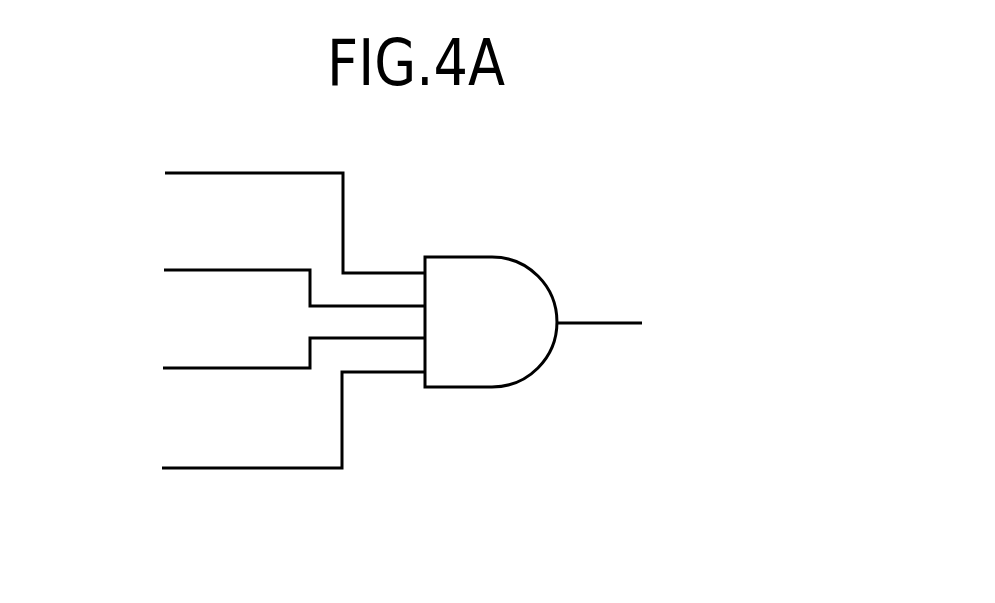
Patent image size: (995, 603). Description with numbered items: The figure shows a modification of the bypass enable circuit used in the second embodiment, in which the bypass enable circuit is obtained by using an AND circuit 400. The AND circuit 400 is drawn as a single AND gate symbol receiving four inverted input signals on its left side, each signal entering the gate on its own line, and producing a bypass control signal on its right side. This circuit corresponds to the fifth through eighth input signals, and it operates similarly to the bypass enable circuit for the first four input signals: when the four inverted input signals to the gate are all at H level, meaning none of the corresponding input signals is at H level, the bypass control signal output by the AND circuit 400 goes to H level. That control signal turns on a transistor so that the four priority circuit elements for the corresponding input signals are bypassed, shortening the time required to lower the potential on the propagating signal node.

The AND circuit 400 is at (532, 202).